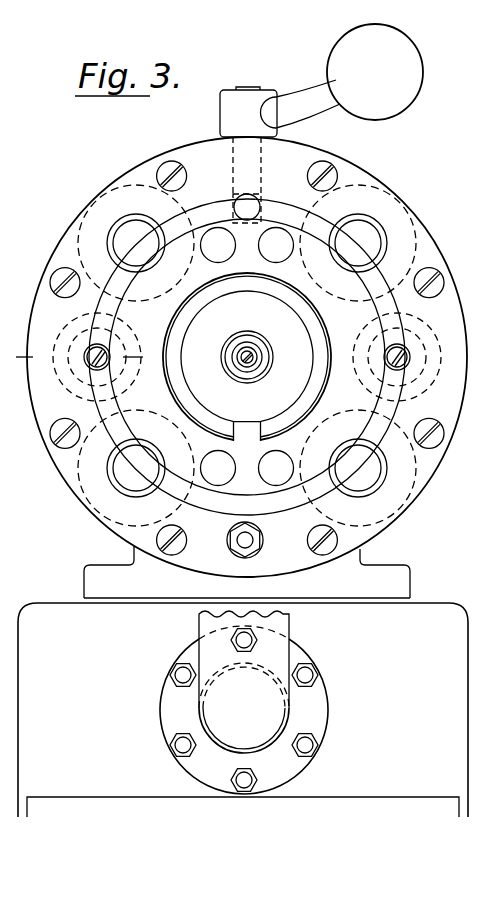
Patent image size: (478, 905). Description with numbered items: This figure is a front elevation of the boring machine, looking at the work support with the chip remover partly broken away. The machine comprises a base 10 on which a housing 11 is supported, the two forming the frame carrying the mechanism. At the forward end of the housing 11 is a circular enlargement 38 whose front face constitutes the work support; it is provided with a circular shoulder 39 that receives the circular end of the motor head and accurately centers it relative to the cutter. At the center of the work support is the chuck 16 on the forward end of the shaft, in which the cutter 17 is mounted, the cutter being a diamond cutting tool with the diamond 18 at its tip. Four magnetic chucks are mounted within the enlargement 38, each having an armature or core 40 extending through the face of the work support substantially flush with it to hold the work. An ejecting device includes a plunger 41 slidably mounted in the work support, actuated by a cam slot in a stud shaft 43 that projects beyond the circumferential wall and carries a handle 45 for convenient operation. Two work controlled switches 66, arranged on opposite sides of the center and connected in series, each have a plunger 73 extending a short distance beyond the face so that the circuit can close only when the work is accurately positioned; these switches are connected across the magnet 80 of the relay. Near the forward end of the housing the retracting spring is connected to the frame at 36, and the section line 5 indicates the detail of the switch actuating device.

The section line 5- 5 is at (78, 358).
The base 10 is at (410, 623).
The housing 11 is at (358, 562).
The chuck 16 is at (247, 364).
The cutter 17 is at (258, 358).
The diamond 18 is at (248, 352).
The spring connection to frame 36 is at (256, 541).
The circular enlargement 38 is at (137, 164).
The circular shoulder 39 is at (247, 357).
The armature or core 40 is at (128, 240).
The plunger 41 is at (240, 205).
The stud shaft 43 is at (253, 89).
The handle 45 is at (342, 76).
The work controlled switch 66 is at (62, 375).
The plunger 73 is at (106, 353).
The magnet 80 is at (275, 622).